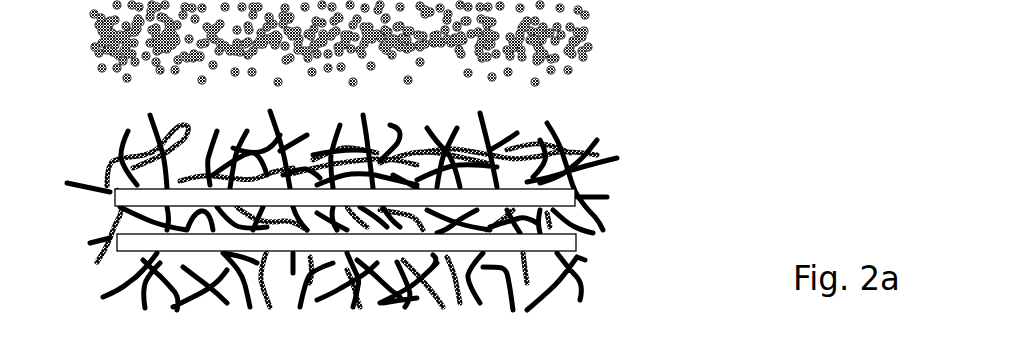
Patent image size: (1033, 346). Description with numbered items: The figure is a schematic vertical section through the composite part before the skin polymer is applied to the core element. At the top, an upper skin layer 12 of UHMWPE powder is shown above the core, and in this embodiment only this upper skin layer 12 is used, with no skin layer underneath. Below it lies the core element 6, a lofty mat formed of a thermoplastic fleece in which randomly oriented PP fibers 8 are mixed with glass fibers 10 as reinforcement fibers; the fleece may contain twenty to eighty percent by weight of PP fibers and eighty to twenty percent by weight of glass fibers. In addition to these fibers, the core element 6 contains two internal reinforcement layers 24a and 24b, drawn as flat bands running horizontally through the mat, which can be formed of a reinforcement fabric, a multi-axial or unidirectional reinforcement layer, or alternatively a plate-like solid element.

The upper skin layer 12 is at (525, 43).
The glass fibers 10 is at (97, 163).
The PP fibers 8 is at (598, 146).
The core element 6 is at (400, 213).
The first internal reinforcement layer 24a is at (130, 200).
The second internal reinforcement layer 24b is at (142, 242).